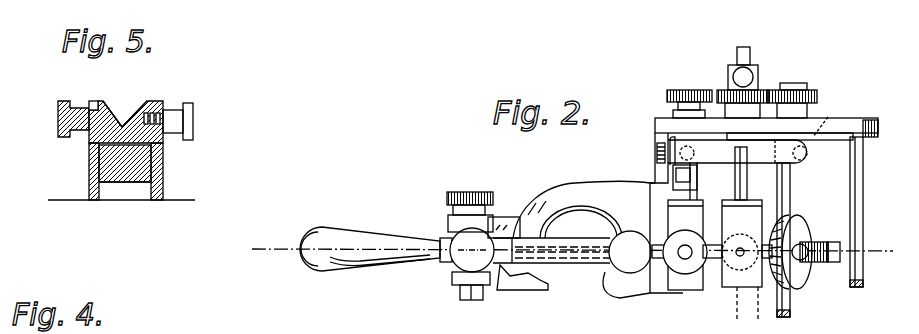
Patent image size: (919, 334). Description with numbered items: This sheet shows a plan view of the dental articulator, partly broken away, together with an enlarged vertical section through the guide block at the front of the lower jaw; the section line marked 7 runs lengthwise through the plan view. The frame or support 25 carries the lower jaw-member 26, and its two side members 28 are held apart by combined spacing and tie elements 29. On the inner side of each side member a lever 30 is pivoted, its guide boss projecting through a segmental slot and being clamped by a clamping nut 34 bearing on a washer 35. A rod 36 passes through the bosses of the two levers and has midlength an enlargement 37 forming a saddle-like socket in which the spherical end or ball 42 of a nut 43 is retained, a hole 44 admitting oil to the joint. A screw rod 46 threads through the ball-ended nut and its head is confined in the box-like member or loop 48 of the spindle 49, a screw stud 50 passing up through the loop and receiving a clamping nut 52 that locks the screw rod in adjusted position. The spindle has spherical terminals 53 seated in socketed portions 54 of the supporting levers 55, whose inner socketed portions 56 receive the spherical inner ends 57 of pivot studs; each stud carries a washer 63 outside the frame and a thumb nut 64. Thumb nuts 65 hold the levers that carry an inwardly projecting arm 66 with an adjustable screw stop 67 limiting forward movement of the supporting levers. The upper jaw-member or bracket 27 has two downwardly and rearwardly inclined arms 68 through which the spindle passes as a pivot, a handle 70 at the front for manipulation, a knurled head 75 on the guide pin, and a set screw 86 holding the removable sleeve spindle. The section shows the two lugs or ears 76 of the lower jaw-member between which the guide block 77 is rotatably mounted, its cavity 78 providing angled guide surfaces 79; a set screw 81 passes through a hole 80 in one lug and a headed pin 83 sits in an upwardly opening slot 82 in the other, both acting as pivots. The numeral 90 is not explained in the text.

In FIG. 2, the section line 7 is at (570, 251).
In FIG. 2, the frame or support 25 is at (865, 118).
In FIG. 5, the lower jaw-member 26 is at (130, 183).
In FIG. 2, the lower jaw-member 26 is at (518, 287).
In FIG. 2, the upper jaw-member or bracket 27 is at (570, 190).
In FIG. 2, the side members 28 is at (871, 136).
In FIG. 2, the combined spacing and tie elements 29 is at (791, 184).
In FIG. 2, the lever 30 is at (822, 140).
In FIG. 2, the clamping nuts 34 is at (758, 88).
In FIG. 2, the washers 35 is at (790, 88).
In FIG. 2, the rod 36 is at (747, 181).
In FIG. 2, the enlargement 37 is at (737, 243).
In FIG. 2, the spherical end or ball 42 is at (745, 262).
In FIG. 2, the nut 43 is at (800, 279).
In FIG. 2, the hole 44 is at (738, 256).
In FIG. 2, the screw rod 46 is at (822, 244).
In FIG. 2, the box-like member or loop 48 is at (677, 245).
In FIG. 2, the spindle 49 is at (697, 170).
In FIG. 2, the screw stud 50 is at (682, 262).
In FIG. 2, the clamping nut 52 is at (690, 266).
In FIG. 2, the spherical terminals 53 is at (656, 155).
In FIG. 2, the socketed portions 54 is at (669, 145).
In FIG. 2, the supporting levers 55 is at (702, 156).
In FIG. 2, the socketed portions 56 is at (863, 172).
In FIG. 2, the spherical inner ends 57 is at (826, 118).
In FIG. 2, the washer 63 is at (816, 114).
In FIG. 2, the thumb nut 64 is at (818, 92).
In FIG. 2, the thumb nuts 65 is at (668, 98).
In FIG. 2, the inwardly projecting arm 66 is at (662, 170).
In FIG. 2, the adjustable screw stop 67 is at (653, 153).
In FIG. 2, the downwardly and rearwardly inclined arms 68 is at (621, 196).
In FIG. 2, the handle 70 is at (388, 262).
In FIG. 2, the knurled head 75 is at (462, 266).
In FIG. 5, the lugs or ears 76 is at (92, 150).
In FIG. 2, the lugs or ears 76 is at (450, 222).
In FIG. 5, the guide block 77 is at (163, 174).
In FIG. 5, the cavity 78 is at (128, 108).
In FIG. 5, the guide surfaces 79 is at (118, 114).
In FIG. 5, the hole 80 is at (166, 108).
In FIG. 5, the set screw 81 is at (193, 121).
In FIG. 2, the set screw 81 is at (470, 198).
In FIG. 5, the upwardly opening slot 82 is at (90, 102).
In FIG. 5, the headed pin 83 is at (58, 113).
In FIG. 2, the headed pin 83 is at (471, 300).
In FIG. 2, the set screw 86 is at (612, 268).
In FIG. 2, the guide 90 is at (761, 327).